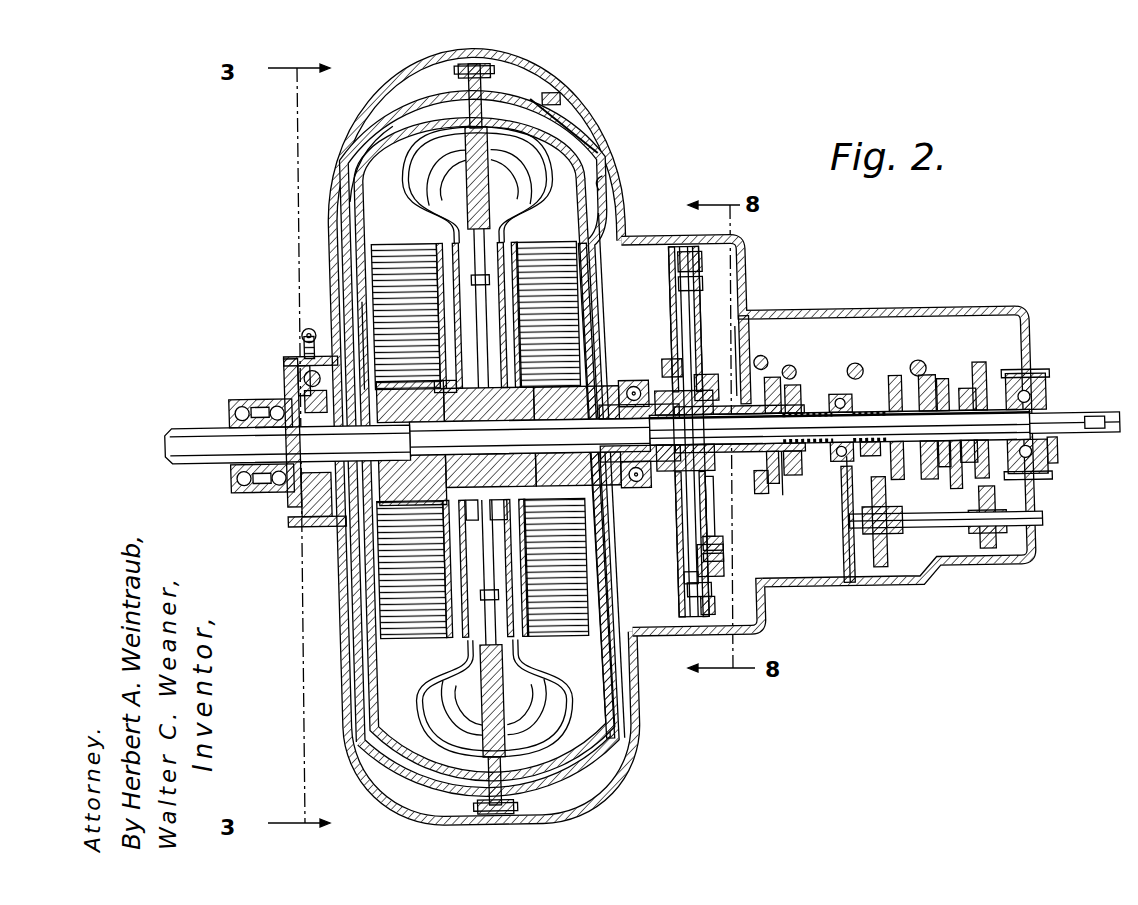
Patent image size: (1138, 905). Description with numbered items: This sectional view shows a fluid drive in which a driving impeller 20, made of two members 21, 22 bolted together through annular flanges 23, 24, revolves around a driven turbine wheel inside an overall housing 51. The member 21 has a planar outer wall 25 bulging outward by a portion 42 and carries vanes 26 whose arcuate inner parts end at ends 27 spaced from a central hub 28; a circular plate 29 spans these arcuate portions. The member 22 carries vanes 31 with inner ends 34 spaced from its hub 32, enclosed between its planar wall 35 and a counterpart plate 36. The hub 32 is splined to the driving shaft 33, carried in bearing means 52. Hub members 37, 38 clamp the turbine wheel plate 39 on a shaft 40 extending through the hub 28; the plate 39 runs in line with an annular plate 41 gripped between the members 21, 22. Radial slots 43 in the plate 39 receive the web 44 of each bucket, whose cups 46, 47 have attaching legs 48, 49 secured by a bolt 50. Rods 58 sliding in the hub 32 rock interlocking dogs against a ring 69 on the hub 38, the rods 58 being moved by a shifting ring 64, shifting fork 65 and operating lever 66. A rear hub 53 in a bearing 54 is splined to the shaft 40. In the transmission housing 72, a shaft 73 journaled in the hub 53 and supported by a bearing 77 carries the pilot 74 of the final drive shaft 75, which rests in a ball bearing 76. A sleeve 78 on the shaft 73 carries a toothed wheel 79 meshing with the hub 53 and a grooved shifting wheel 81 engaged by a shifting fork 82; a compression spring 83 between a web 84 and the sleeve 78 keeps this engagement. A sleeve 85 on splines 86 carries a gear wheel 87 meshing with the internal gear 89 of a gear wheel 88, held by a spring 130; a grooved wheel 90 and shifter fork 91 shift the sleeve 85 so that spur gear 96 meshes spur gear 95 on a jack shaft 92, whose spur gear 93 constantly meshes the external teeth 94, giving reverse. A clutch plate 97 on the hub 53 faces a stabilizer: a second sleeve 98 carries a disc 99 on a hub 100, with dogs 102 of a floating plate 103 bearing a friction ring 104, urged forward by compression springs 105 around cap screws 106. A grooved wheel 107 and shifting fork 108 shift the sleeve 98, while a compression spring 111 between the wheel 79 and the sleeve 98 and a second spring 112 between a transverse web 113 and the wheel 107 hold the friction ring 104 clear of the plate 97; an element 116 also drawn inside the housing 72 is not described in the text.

The driving impeller 20 is at (600, 150).
The impeller member 21 is at (586, 138).
The impeller member 22 is at (386, 120).
The annular flange 23 is at (498, 72).
The annular flange 24 is at (470, 72).
The central planar outer wall 25 is at (598, 560).
The vanes 26 is at (580, 200).
The end 27 is at (505, 386).
The central hub 28 is at (548, 392).
The circular plate 29 is at (513, 342).
The vanes 31 is at (446, 290).
The central hub 32 is at (410, 504).
The driving shaft 33 is at (166, 445).
The inner terminal ends 34 is at (418, 385).
The planar wall 35 is at (380, 330).
The circular plate 36 is at (466, 312).
The hub member 37 is at (511, 492).
The hub member 38 is at (470, 495).
The turbine wheel plate 39 is at (488, 312).
The shaft 40 is at (529, 436).
The annular plate 41 is at (472, 112).
The bulge portion 42 is at (605, 185).
The radial slots 43 is at (494, 672).
The web 44 is at (490, 190).
The cup 46 is at (456, 200).
The cup 47 is at (496, 208).
The attaching leg 48 is at (476, 590).
The attaching leg 49 is at (494, 592).
The bolt 50 is at (490, 280).
The overall housing 51 is at (578, 72).
The bearing means 52 is at (228, 418).
The hub 53 is at (656, 504).
The bearing 54 is at (612, 390).
The rod 58 is at (352, 398).
The shifting ring 64 is at (304, 395).
The shifting fork 65 is at (305, 374).
The operating lever 66 is at (305, 340).
The ring 69 is at (448, 382).
The transmission housing 72 is at (918, 306).
The shaft 73 is at (796, 418).
The pilot 74 is at (956, 462).
The final drive shaft 75 is at (1078, 420).
The ball bearing 76 is at (1048, 447).
The bearing 77 is at (842, 470).
The sleeve 78 is at (788, 492).
The toothed wheel 79 is at (680, 514).
The grooved shifting wheel 81 is at (784, 472).
The shifting fork 82 is at (798, 380).
The compression spring 83 is at (803, 460).
The web 84 is at (836, 492).
The sleeve 85 is at (940, 410).
The splines 86 is at (870, 418).
The gear wheel 87 is at (968, 496).
The gear wheel 88 is at (988, 385).
The internal gear 89 is at (964, 394).
The grooved wheel 90 is at (928, 486).
The shifter fork 91 is at (924, 368).
The jack shaft 92 is at (930, 532).
The spur gear 93 is at (994, 538).
The external teeth 94 is at (982, 370).
The spur gear 95 is at (884, 554).
The spur gear 96 is at (900, 384).
The clutch plate 97 is at (690, 564).
The second sleeve 98 is at (738, 350).
The disc 99 is at (703, 282).
The hub 100 is at (712, 520).
The dogs 102 is at (696, 248).
The floating plate 103 is at (702, 270).
The friction ring 104 is at (694, 586).
The compression springs 105 is at (718, 565).
The cap screws 106 is at (720, 553).
The sleeve shifting grooved wheel 107 is at (768, 492).
The shifting fork 108 is at (770, 366).
The compression spring 111 is at (676, 368).
The second compression spring 112 is at (768, 380).
The transverse web 113 is at (742, 356).
The pin 116 is at (857, 368).
The spring 130 is at (870, 450).